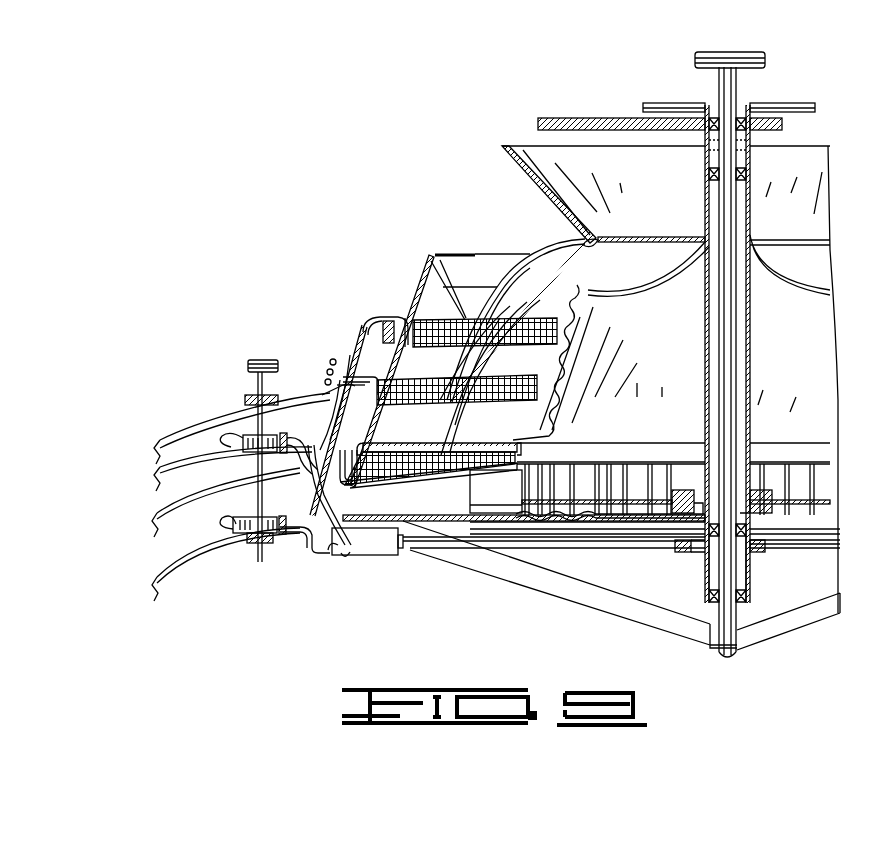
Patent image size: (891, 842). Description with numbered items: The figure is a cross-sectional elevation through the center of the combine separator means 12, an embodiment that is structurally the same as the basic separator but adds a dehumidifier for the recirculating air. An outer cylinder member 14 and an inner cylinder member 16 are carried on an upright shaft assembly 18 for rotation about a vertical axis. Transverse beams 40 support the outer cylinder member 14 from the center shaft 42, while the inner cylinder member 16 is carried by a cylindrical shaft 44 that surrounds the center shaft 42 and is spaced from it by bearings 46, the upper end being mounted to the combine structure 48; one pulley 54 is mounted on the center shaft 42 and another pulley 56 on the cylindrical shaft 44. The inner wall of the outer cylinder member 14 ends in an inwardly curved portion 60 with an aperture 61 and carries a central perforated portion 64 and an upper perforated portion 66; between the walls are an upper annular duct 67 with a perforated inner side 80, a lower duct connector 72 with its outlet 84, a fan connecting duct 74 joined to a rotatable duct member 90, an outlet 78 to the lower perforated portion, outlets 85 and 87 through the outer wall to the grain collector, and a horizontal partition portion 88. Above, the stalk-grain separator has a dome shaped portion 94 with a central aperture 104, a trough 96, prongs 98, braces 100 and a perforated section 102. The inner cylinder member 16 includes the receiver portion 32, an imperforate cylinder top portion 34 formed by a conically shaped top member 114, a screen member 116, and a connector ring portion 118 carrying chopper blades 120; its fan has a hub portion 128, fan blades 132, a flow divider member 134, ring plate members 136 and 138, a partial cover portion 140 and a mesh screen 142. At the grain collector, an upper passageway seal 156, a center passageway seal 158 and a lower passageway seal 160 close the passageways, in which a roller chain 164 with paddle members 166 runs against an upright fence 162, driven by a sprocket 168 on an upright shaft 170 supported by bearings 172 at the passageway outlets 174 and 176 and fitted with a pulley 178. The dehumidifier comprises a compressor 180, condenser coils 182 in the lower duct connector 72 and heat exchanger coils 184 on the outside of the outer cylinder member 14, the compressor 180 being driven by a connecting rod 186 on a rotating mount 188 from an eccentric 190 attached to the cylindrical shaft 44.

The combine separator means 12 is at (372, 105).
The outer cylinder member 14 is at (373, 272).
The inner cylinder member 16 is at (780, 262).
The upright shaft assembly 18 is at (785, 148).
The receiver portion 32 is at (600, 132).
The imperforate cylinder top portion 34 is at (668, 275).
The transverse beams 40 is at (828, 610).
The center shaft 42 is at (725, 655).
The cylindrical shaft 44 is at (750, 603).
The bearings 46 is at (705, 178).
The combine structure 48 is at (562, 118).
The pulley 54 is at (737, 60).
The pulley 56 is at (765, 106).
The inwardly curved portion 60 is at (436, 252).
The aperture 61 is at (488, 254).
The central perforated portion 64 is at (525, 385).
The upper perforated portion 66 is at (560, 342).
The upper annular duct 67 is at (378, 340).
The lower duct connector 72 is at (360, 322).
The fan connecting duct 74 is at (444, 515).
The outlet 78 is at (350, 482).
The perforated inner side 80 is at (400, 318).
The outlet 84 is at (372, 418).
The outlet 85 is at (361, 369).
The outlet 87 is at (345, 540).
The horizontal partition portion 88 is at (378, 446).
The duct member 90 is at (464, 474).
The dome shaped portion 94 is at (556, 240).
The trough 96 is at (505, 280).
The prongs 98 is at (555, 352).
The braces 100 is at (505, 146).
The perforated section 102 is at (516, 316).
The aperture 104 is at (590, 246).
The conically shaped top member 114 is at (596, 290).
The screen member 116 is at (563, 320).
The connector ring portion 118 is at (695, 445).
The chopper blades 120 is at (468, 455).
The hub portion 128 is at (770, 490).
The fan blades 132 is at (568, 482).
The flow divider member 134 is at (616, 500).
The ring plate member 136 is at (497, 501).
The ring plate member 138 is at (496, 491).
The partial cover portion 140 is at (640, 520).
The mesh screen 142 is at (583, 542).
The upper passageway seal 156 is at (335, 410).
The center passageway seal 158 is at (298, 458).
The lower passageway seal 160 is at (300, 540).
The upright fence 162 is at (285, 435).
The roller chain 164 is at (246, 470).
The paddle members 166 is at (240, 452).
The sprocket 168 is at (268, 435).
The upright shaft 170 is at (255, 385).
The bearings 172 is at (250, 398).
The passageway outlet 174 is at (193, 430).
The passageway outlet 176 is at (169, 515).
The pulley 178 is at (260, 358).
The compressor 180 is at (385, 557).
The condenser coils 182 is at (350, 355).
The heat exchanger coils 184 is at (340, 380).
The connecting rod 186 is at (577, 545).
The rotating mount 188 is at (675, 550).
The eccentric 190 is at (695, 560).